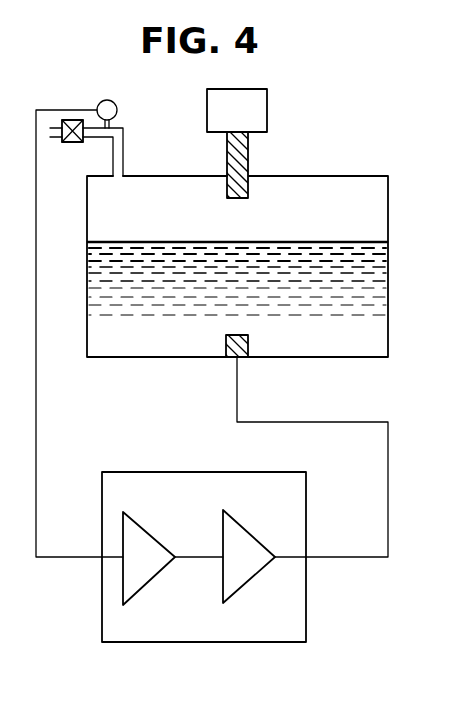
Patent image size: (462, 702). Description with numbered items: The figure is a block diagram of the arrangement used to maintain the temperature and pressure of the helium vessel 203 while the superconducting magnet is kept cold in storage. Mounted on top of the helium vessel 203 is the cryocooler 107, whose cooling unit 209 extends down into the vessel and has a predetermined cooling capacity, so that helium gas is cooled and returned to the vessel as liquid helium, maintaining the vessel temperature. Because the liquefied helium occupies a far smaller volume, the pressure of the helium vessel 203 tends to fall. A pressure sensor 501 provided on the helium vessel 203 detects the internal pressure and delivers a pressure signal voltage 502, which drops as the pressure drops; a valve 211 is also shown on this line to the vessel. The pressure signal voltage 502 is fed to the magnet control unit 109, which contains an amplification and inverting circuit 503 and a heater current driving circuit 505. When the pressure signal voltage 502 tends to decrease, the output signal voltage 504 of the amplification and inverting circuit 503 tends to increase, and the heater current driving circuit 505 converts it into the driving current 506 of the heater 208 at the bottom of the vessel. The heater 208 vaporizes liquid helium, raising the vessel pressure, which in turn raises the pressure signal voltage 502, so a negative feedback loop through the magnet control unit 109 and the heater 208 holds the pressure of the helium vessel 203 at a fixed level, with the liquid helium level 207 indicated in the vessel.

The cryocooler 107 is at (267, 110).
The magnet control unit 109 is at (306, 505).
The helium vessel 203 is at (388, 250).
The liquid 207 is at (340, 242).
The heater 208 is at (243, 358).
The cooling unit 209 is at (249, 160).
The valve 211 is at (66, 143).
The pressure sensor 501 is at (116, 115).
The pressure signal voltage 502 is at (62, 558).
The amplification and inverting circuit 503 is at (156, 540).
The output signal voltage 504 is at (190, 560).
The heater current driving circuit 505 is at (255, 577).
The driving current 506 is at (350, 558).